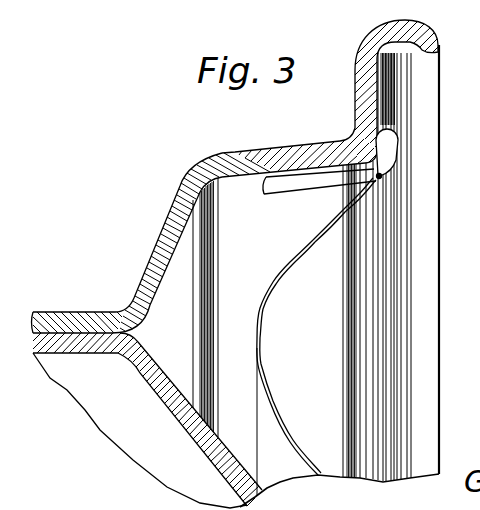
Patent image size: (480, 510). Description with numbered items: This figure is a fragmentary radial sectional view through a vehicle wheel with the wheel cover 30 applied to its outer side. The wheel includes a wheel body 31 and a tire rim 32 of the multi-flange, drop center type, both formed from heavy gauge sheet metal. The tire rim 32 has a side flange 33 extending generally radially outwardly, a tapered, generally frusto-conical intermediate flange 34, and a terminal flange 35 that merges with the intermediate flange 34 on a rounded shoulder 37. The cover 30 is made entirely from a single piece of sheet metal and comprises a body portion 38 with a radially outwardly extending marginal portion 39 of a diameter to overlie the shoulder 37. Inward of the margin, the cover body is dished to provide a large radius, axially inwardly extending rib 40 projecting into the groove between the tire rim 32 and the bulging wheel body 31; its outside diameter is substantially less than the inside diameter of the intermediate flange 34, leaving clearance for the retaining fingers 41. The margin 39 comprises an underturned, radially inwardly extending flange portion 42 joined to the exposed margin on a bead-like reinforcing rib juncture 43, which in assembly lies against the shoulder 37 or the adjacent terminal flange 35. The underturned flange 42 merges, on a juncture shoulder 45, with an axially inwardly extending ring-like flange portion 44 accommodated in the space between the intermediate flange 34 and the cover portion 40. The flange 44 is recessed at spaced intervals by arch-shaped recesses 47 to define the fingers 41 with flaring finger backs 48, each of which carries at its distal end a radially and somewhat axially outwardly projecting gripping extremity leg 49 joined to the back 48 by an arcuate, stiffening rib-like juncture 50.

The wheel cover 30 is at (415, 385).
The wheel body 31 is at (177, 407).
The tire rim 32 is at (88, 312).
The side flange 33 is at (155, 244).
The intermediate flange 34 is at (254, 153).
The terminal flange 35 is at (358, 70).
The rounded shoulder 37 is at (358, 138).
The body portion 38 is at (292, 480).
The marginal portion 39 is at (383, 173).
The rib 40 is at (259, 325).
The retaining fingers 41 is at (222, 307).
The underturned flange portion 42 is at (392, 156).
The reinforcing rib juncture 43 is at (392, 126).
The ring-like flange portion 44 is at (348, 192).
The juncture shoulder 45 is at (384, 181).
The recesses 47 is at (330, 223).
The finger backs 48 is at (281, 196).
The gripping extremity leg 49 is at (263, 180).
The rib-like juncture 50 is at (266, 203).